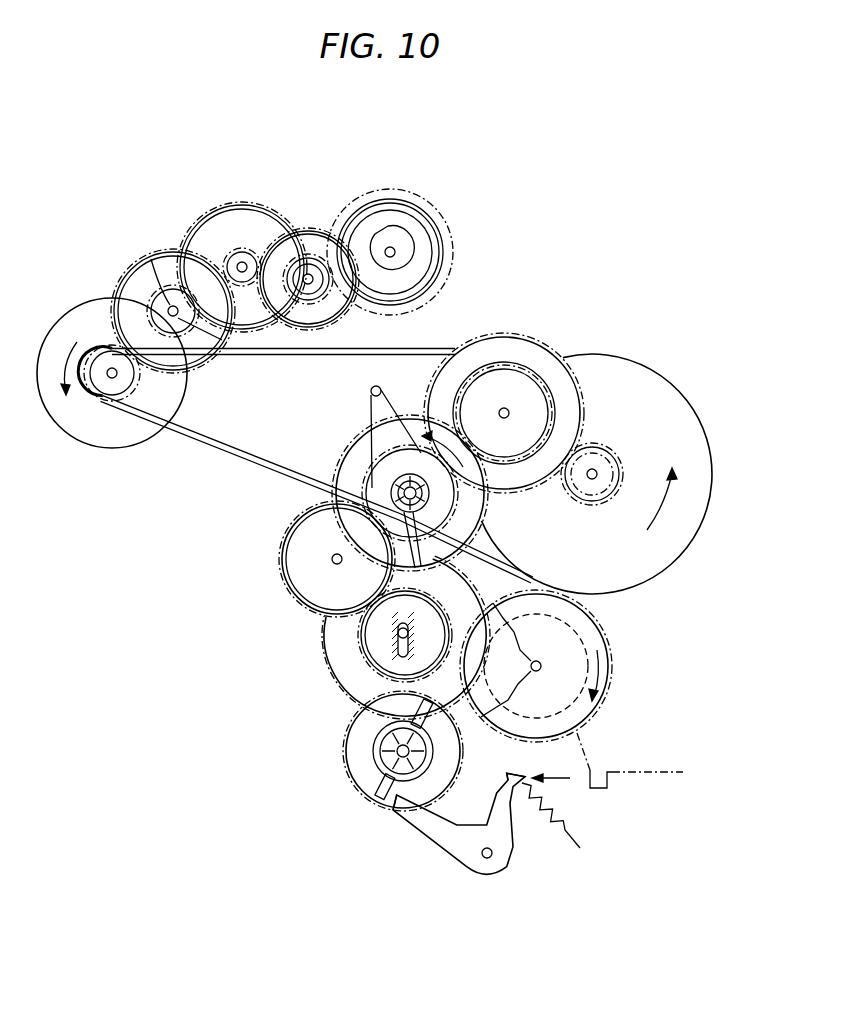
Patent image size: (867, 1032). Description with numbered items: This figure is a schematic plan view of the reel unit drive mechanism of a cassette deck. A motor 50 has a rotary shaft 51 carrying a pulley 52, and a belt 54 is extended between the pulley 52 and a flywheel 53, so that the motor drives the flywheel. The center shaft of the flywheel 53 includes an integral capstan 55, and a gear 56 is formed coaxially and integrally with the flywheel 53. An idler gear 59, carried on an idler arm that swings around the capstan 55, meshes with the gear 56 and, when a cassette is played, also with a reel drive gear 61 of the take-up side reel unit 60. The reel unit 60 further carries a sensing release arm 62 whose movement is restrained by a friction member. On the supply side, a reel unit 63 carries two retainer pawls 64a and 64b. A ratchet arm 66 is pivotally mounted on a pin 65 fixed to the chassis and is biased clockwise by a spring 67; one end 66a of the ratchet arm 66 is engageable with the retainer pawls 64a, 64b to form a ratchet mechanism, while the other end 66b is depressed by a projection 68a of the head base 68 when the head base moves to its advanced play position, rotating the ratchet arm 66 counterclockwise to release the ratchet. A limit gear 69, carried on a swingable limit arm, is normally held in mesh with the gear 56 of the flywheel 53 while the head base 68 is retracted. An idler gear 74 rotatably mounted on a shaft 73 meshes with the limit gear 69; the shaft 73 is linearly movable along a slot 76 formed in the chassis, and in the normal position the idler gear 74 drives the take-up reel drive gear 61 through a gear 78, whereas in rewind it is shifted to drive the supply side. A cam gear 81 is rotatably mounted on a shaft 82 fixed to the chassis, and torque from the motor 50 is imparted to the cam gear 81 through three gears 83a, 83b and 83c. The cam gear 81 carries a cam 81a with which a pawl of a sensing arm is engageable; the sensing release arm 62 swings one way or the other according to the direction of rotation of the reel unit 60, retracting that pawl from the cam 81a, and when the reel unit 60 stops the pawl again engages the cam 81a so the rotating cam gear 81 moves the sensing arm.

The motor 50 is at (68, 425).
The rotary shaft 51 is at (112, 380).
The pulley 52 is at (136, 377).
The flywheel 53 is at (672, 553).
The belt 54 is at (268, 458).
The capstan 55 is at (597, 469).
The gear 56 is at (583, 503).
The idler gear 59 is at (543, 338).
The reel unit 60 is at (341, 433).
The reel drive gear 61 is at (337, 461).
The sensing release arm 62 is at (370, 412).
The reel unit 63 is at (348, 808).
The retainer pawl 64a is at (376, 787).
The retainer pawl 64b is at (437, 723).
The pin 65 is at (487, 859).
The ratchet arm 66 is at (446, 853).
The one end of ratchet arm 66a is at (398, 805).
The other end of ratchet arm 66b is at (511, 793).
The spring 67 is at (558, 828).
The head base 68 is at (663, 775).
The projection 68a is at (610, 788).
The limit gear 69 is at (607, 680).
The shaft 73 is at (395, 652).
The idler gear 74 is at (322, 640).
The slot 76 is at (416, 628).
The gear 78 is at (282, 576).
The cam gear 81 is at (440, 211).
The cam 81a is at (385, 228).
The shaft 82 is at (394, 256).
The gear 83a is at (147, 258).
The gear 83b is at (231, 203).
The gear 83c is at (312, 228).